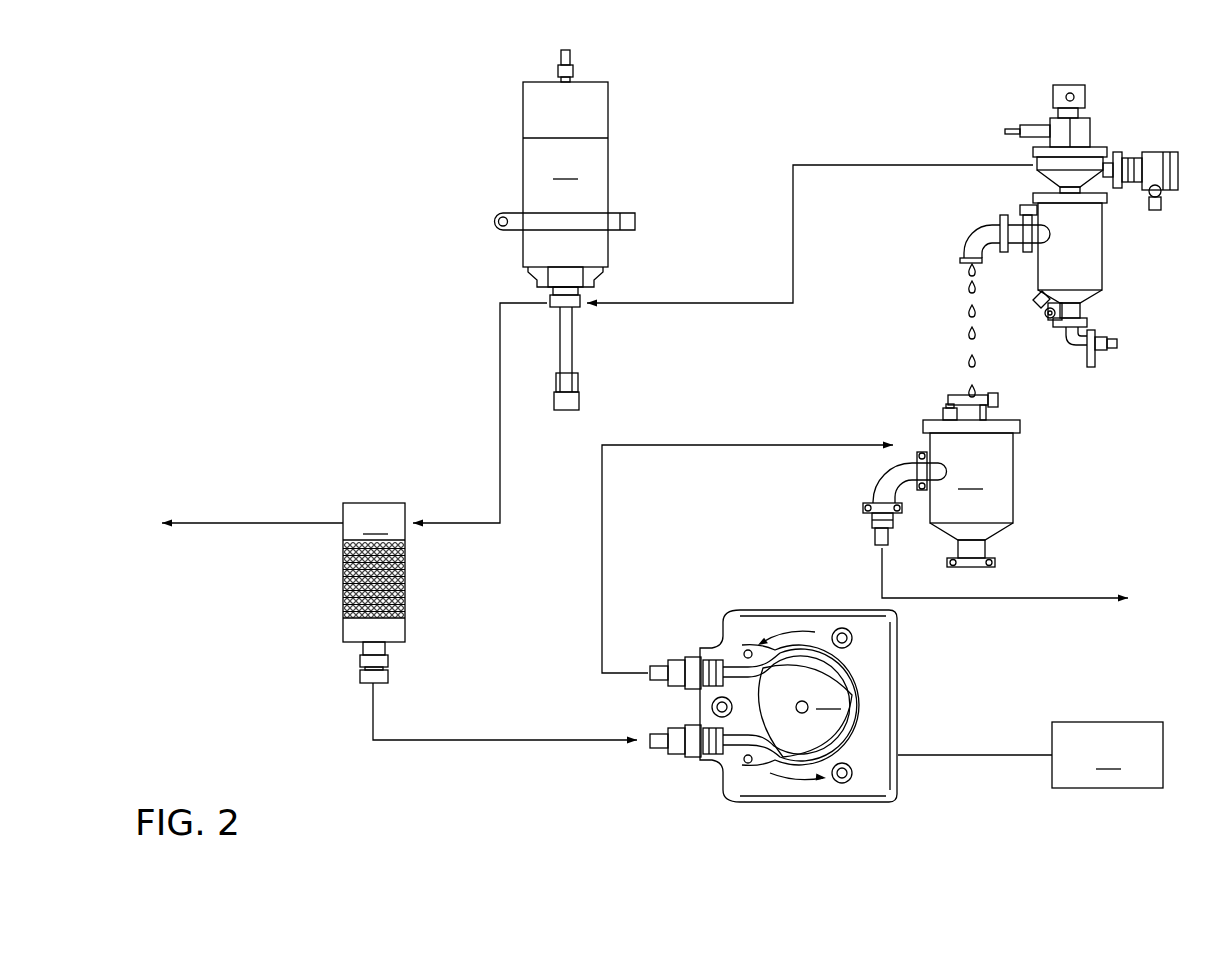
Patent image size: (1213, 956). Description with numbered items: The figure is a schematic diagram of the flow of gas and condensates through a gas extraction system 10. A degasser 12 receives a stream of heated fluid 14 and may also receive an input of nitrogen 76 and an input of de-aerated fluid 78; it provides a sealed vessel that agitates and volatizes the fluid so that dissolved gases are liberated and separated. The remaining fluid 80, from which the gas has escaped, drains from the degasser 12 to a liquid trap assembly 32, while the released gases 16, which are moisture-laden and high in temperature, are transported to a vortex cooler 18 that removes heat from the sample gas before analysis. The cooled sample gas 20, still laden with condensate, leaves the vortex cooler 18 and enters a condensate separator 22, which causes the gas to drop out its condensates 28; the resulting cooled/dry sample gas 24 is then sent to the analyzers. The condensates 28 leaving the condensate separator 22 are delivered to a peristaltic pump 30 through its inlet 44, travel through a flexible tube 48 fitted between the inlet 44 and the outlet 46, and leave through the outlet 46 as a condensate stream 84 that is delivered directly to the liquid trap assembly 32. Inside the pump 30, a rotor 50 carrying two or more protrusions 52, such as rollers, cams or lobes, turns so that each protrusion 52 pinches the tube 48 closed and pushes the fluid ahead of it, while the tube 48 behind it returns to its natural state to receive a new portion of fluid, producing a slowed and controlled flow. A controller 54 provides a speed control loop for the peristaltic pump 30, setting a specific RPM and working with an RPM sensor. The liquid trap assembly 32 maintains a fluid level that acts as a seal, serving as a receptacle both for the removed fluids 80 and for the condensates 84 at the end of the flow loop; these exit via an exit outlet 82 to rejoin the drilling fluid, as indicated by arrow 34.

The gas extraction system 10 is at (705, 106).
The degasser 12 is at (1118, 136).
The heated fluid 14 is at (1117, 343).
The released gases 16 is at (718, 303).
The vortex cooler 18 is at (565, 230).
The cooled sample gas 20 is at (500, 420).
The condensate separator 22 is at (374, 593).
The cooled/dry sample gas 24 is at (252, 523).
The condensates 28 is at (430, 740).
The peristaltic pump 30 is at (921, 674).
The liquid trap assembly 32 is at (971, 480).
The arrow 34 is at (1047, 598).
The inlet 44 is at (650, 745).
The outlet 46 is at (650, 670).
The flexible tube 48 is at (744, 742).
The rotor 50 is at (806, 711).
The protrusions 52 is at (773, 673).
The controller 54 is at (1107, 755).
The nitrogen 76 is at (1051, 322).
The de-aerated fluid 78 is at (1040, 312).
The remaining fluid 80 is at (962, 305).
The exit outlet 82 is at (866, 540).
The condensate stream 84 is at (740, 445).